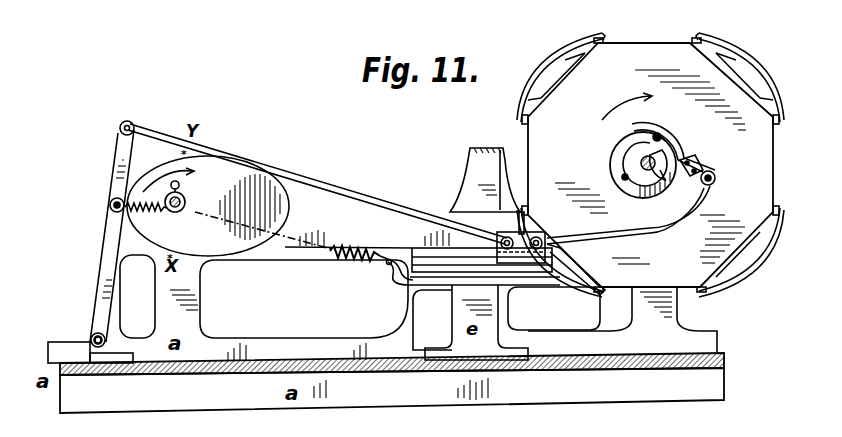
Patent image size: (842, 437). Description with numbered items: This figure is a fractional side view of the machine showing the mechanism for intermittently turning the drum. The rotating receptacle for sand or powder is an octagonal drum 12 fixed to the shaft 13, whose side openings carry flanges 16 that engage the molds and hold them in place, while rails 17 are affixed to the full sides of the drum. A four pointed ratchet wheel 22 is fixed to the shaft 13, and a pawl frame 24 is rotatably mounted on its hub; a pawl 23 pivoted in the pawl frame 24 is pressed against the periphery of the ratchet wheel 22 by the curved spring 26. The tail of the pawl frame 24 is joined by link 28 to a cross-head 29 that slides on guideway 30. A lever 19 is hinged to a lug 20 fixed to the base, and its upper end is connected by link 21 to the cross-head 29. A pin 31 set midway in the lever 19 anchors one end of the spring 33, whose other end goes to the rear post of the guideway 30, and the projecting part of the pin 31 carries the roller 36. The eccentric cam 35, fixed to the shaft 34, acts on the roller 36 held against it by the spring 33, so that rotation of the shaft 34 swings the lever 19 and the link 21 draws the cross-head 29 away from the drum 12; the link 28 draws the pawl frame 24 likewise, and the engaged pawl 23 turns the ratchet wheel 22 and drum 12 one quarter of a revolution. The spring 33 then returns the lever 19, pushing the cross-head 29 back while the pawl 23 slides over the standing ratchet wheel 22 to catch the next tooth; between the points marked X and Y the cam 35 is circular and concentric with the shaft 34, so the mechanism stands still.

The drum 12 is at (650, 165).
The shaft 13 is at (641, 163).
The flanges 16 is at (692, 40).
The rails 17 is at (722, 40).
The lever 19 is at (112, 234).
The lug 20 is at (92, 337).
The link 21 is at (336, 194).
The ratchet wheel 22 is at (640, 180).
The pawl 23 is at (628, 152).
The pawl frame 24 is at (713, 172).
The curved spring 26 is at (674, 141).
The link 28 is at (655, 230).
The cross-head 29 is at (521, 247).
The guideway 30 is at (437, 270).
The pin 31 is at (110, 207).
The spring 33 is at (370, 267).
The shaft 34 is at (186, 202).
The eccentric cam 35 is at (231, 206).
The roller 36 is at (112, 200).